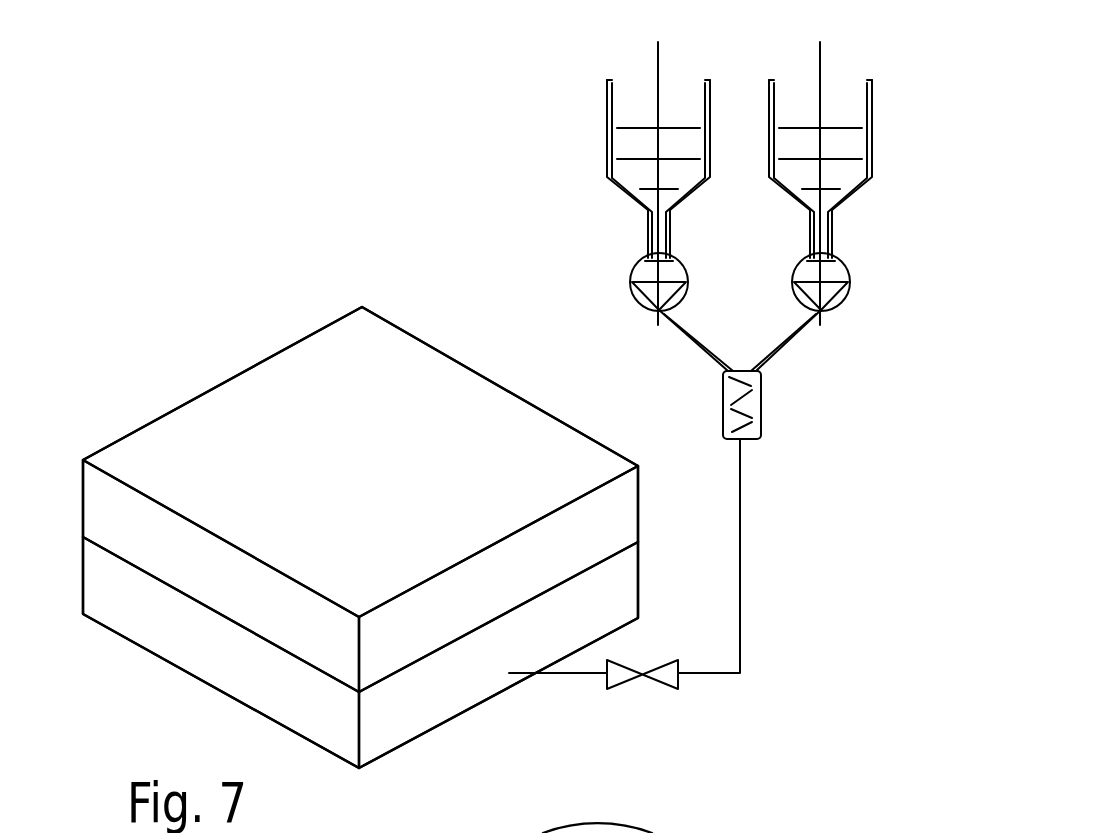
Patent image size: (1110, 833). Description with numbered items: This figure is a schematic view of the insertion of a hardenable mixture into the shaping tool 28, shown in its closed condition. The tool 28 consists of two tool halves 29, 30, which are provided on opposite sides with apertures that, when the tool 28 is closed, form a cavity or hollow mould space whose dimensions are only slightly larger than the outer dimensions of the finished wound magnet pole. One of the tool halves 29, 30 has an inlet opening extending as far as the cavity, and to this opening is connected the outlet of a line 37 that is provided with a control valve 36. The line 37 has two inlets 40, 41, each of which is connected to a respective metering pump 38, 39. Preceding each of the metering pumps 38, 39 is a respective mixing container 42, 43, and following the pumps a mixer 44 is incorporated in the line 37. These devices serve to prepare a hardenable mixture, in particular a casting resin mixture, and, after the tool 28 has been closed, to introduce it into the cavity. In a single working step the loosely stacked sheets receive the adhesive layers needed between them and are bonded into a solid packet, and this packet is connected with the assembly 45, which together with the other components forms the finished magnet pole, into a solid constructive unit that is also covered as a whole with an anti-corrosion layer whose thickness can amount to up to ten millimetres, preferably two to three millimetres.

The tool 28 is at (208, 312).
The tool half 29 is at (160, 460).
The tool half 30 is at (118, 600).
The valve 36 is at (668, 675).
The line 37 is at (740, 600).
The metering pump 38 is at (835, 270).
The metering pump 39 is at (648, 270).
The inlet 40 is at (775, 352).
The inlet 41 is at (703, 352).
The mixing container 42 is at (845, 100).
The mixing container 43 is at (685, 98).
The mixer 44 is at (760, 398).
The assembly 45 is at (815, 832).